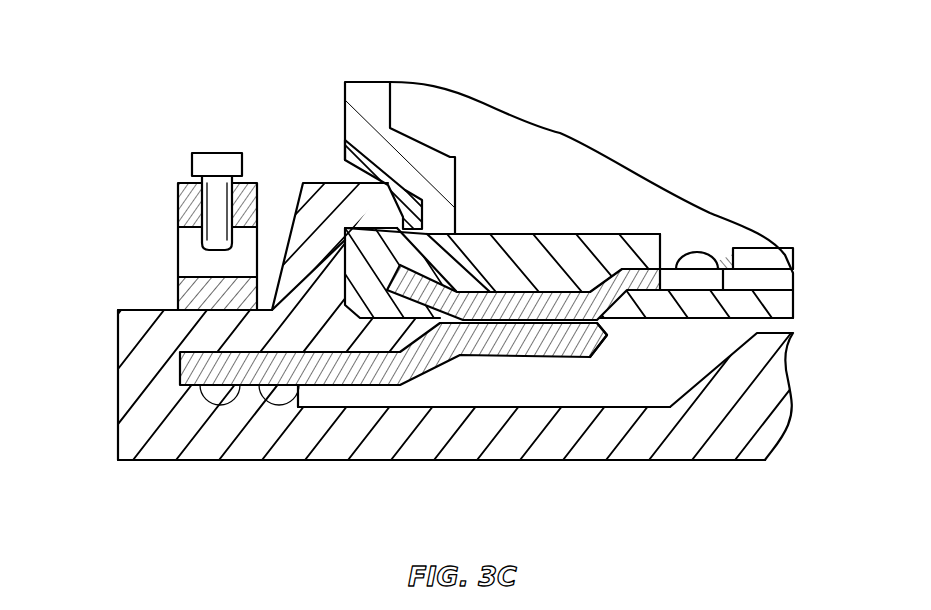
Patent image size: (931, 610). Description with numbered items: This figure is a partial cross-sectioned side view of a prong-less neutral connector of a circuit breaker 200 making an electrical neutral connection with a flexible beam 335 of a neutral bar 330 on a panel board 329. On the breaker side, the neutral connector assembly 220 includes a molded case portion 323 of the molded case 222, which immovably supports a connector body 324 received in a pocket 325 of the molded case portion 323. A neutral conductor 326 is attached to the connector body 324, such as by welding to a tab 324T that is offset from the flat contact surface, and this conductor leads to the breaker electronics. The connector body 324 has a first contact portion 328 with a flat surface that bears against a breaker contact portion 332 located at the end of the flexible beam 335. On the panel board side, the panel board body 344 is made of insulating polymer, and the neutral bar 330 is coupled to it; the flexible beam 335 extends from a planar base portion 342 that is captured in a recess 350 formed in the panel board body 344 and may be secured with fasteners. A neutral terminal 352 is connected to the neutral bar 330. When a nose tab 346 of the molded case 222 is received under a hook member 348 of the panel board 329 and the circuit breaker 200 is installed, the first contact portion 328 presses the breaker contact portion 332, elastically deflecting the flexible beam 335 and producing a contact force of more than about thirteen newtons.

The circuit breaker 200 is at (555, 93).
The neutral connector assembly 220 is at (506, 198).
The molded case 222 is at (351, 81).
The molded case portion 323 is at (553, 231).
The connector body 324 is at (560, 250).
The tab 324T is at (691, 266).
The pocket 325 is at (604, 255).
The neutral conductor 326 is at (760, 247).
The first contact portion 328 is at (520, 321).
The panel board 329 is at (196, 462).
The neutral bar 330 is at (596, 362).
The breaker contact portion 332 is at (503, 313).
The flexible beam 335 is at (367, 427).
The base portion 342 is at (257, 398).
The panel board body 344 is at (165, 445).
The nose tab 346 is at (377, 202).
The hook member 348 is at (378, 243).
The recess 350 is at (351, 404).
The neutral terminal 352 is at (178, 197).